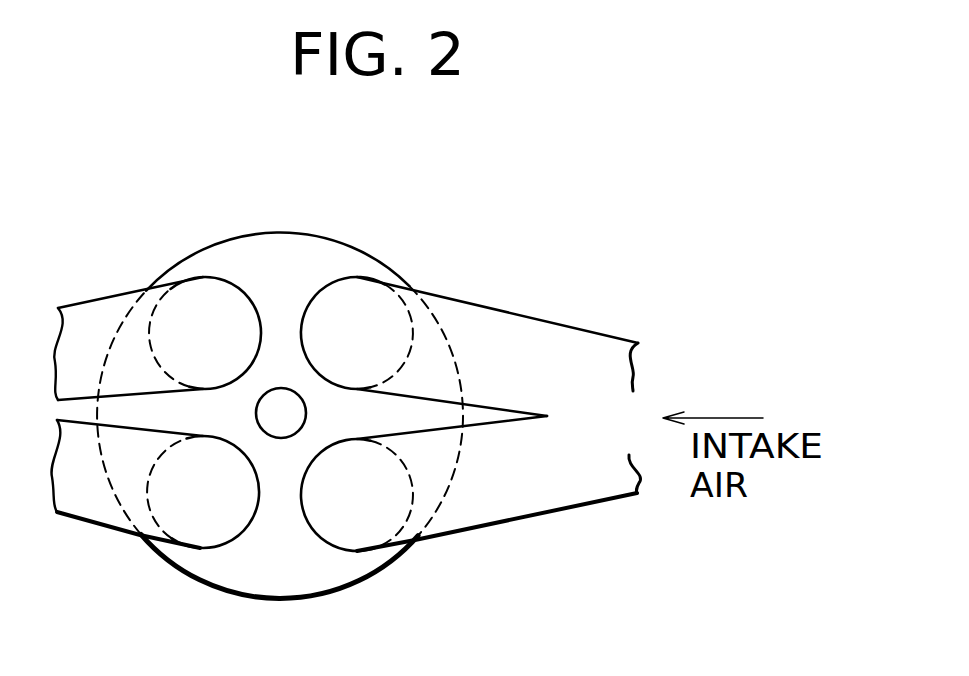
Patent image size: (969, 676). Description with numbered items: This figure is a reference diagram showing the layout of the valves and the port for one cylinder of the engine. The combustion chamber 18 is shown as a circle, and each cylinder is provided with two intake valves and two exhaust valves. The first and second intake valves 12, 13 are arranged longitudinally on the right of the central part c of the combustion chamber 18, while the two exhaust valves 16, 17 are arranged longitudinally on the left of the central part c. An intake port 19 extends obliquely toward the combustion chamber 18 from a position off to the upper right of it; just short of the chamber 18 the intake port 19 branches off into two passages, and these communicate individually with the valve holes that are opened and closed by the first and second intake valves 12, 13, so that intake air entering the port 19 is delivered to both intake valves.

The first intake valve 12 is at (354, 298).
The second intake valve 13 is at (357, 527).
The exhaust valve 16 is at (213, 290).
The exhaust valve 17 is at (202, 527).
The combustion chamber 18 is at (288, 247).
The intake port 19 is at (518, 332).
The central part c is at (280, 420).